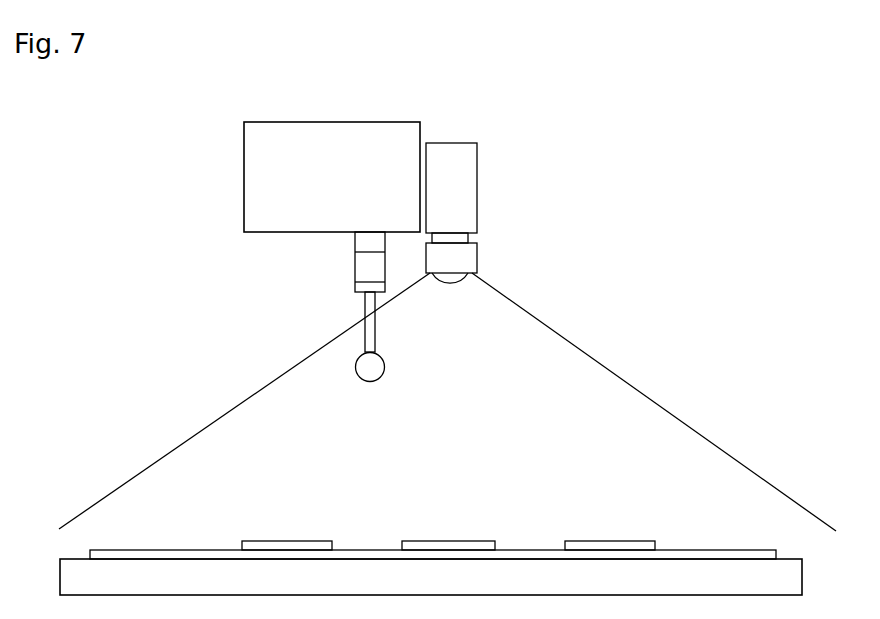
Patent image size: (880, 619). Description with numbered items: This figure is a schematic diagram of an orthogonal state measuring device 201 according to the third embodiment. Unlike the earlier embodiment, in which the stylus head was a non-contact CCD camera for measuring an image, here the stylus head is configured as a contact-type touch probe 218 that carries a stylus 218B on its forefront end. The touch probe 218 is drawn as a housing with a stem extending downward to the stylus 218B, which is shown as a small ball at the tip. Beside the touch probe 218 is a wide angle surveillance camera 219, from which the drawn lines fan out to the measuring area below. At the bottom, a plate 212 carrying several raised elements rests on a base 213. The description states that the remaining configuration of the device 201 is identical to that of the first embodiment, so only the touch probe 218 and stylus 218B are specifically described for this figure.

The touch probe 218 is at (322, 133).
The stylus 218B is at (367, 373).
The wide angle surveillance camera 219 is at (445, 153).
The inspection system 201 is at (542, 265).
The substrate with devices 212 is at (545, 553).
The stage 213 is at (431, 577).